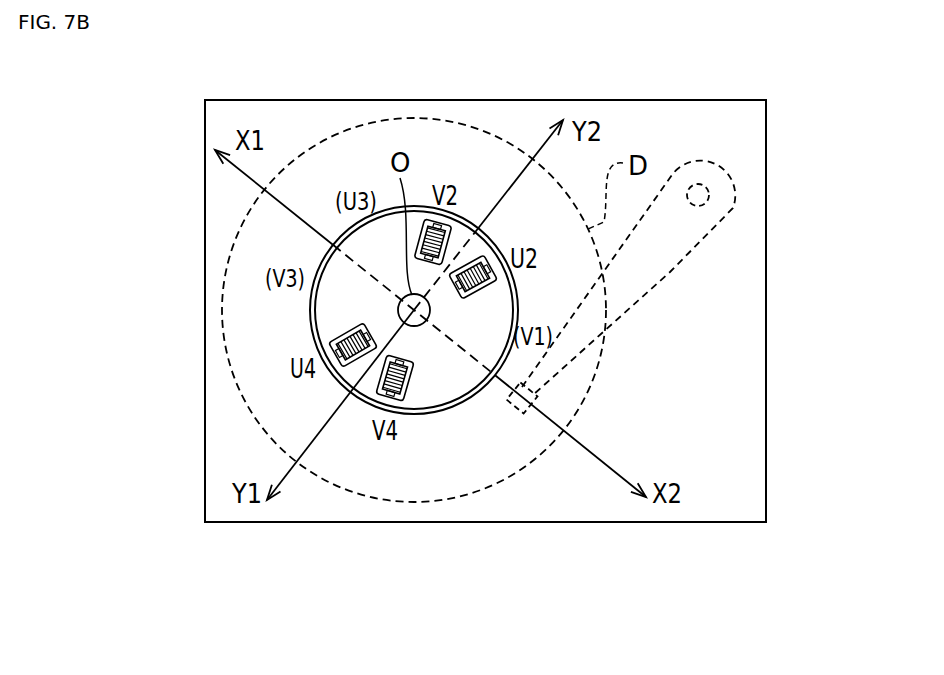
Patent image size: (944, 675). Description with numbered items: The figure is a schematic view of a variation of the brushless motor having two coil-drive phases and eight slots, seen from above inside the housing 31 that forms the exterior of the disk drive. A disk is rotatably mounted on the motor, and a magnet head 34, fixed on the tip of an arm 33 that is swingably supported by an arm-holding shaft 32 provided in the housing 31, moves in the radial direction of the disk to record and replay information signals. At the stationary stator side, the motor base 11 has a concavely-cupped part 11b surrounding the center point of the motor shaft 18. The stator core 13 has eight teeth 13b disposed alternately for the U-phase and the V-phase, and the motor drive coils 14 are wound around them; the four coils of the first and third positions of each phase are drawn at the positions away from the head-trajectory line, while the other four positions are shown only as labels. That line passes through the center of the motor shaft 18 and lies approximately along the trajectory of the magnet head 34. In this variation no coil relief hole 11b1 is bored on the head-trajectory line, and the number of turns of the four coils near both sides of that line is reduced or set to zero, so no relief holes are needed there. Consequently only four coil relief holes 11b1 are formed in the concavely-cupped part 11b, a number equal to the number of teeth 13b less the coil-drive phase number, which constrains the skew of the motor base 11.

The motor base 11 is at (410, 393).
The concavely-cupped part 11b is at (353, 391).
The coil relief hole 11b1 is at (408, 383).
The stator core 13 is at (414, 415).
The tooth 13b is at (405, 414).
The motor drive coil 14 is at (457, 414).
The motor shaft 18 is at (398, 308).
The housing 31 is at (765, 373).
The arm-holding shaft 32 is at (709, 190).
The arm 33 is at (672, 274).
The magnet head 34 is at (532, 400).